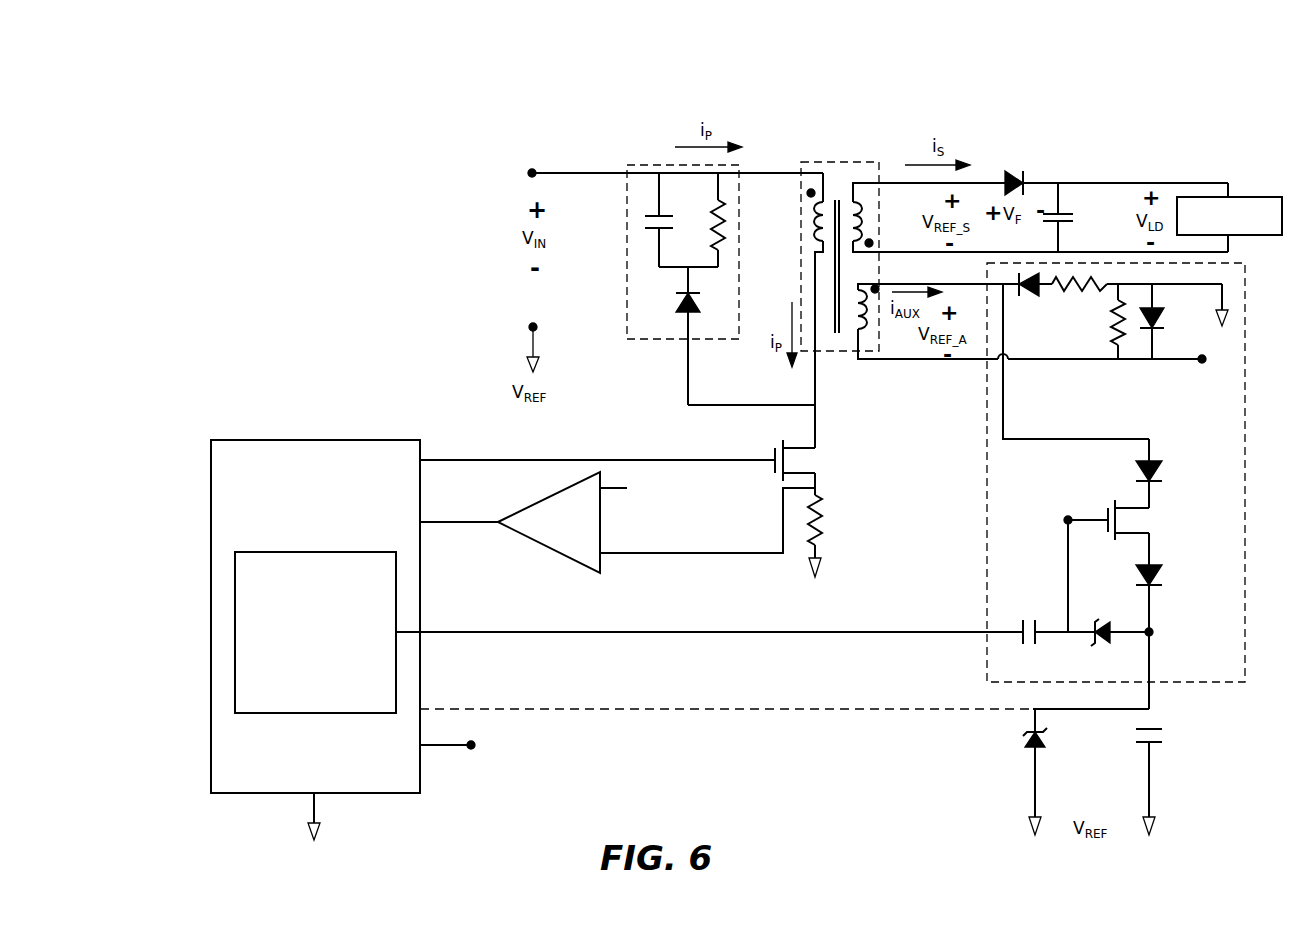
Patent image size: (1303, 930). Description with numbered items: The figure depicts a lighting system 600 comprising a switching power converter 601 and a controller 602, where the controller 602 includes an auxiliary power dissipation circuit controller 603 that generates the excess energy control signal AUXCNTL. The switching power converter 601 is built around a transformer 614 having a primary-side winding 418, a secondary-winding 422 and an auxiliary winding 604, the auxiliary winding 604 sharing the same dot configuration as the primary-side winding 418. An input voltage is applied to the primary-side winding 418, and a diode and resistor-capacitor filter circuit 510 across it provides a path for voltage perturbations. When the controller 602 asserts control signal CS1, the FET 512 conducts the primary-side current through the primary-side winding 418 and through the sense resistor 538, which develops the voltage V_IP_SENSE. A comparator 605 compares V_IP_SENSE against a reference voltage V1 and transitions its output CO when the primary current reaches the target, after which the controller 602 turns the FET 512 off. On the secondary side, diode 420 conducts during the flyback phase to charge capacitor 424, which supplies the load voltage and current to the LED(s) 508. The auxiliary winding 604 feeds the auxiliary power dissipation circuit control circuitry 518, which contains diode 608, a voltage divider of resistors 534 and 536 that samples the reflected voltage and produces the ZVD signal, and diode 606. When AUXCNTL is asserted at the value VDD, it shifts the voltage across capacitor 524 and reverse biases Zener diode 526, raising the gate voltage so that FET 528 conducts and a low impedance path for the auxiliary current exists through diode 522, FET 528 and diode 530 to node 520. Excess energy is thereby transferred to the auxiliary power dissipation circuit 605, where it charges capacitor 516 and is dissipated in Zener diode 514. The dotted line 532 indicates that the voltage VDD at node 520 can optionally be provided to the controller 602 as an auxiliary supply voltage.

The lighting system 600 is at (452, 136).
The switching power converter 601 is at (1133, 120).
The transformer 614 is at (803, 162).
The primary-side winding 418 is at (812, 210).
The secondary-winding 422 is at (868, 232).
The auxiliary winding 604 is at (863, 332).
The diode 420 is at (1012, 168).
The capacitor 424 is at (1075, 216).
The LED(s) 508 is at (1262, 197).
The diode and resistor-capacitor filter circuit 510 is at (627, 258).
The auxiliary power dissipation circuit control circuitry 518 is at (987, 540).
The diode 608 is at (1023, 300).
The resistor 534 is at (1076, 290).
The resistor 536 is at (1110, 320).
The diode 606 is at (1165, 316).
The diode 522 is at (1160, 456).
The FET 528 is at (1152, 526).
The diode 530 is at (1160, 566).
The node 520 is at (1160, 622).
The Zener diode 526 is at (1098, 616).
The capacitor 524 is at (1023, 618).
The dotted line 532 is at (755, 708).
The Zener diode 514 is at (1043, 750).
The capacitor 516 is at (1155, 746).
The auxiliary power dissipation circuit 605 is at (1245, 817).
The FET 512 is at (775, 476).
The resistor 538 is at (818, 494).
The controller 602 is at (617, 657).
The auxiliary power dissipation circuit controller 603 is at (629, 632).